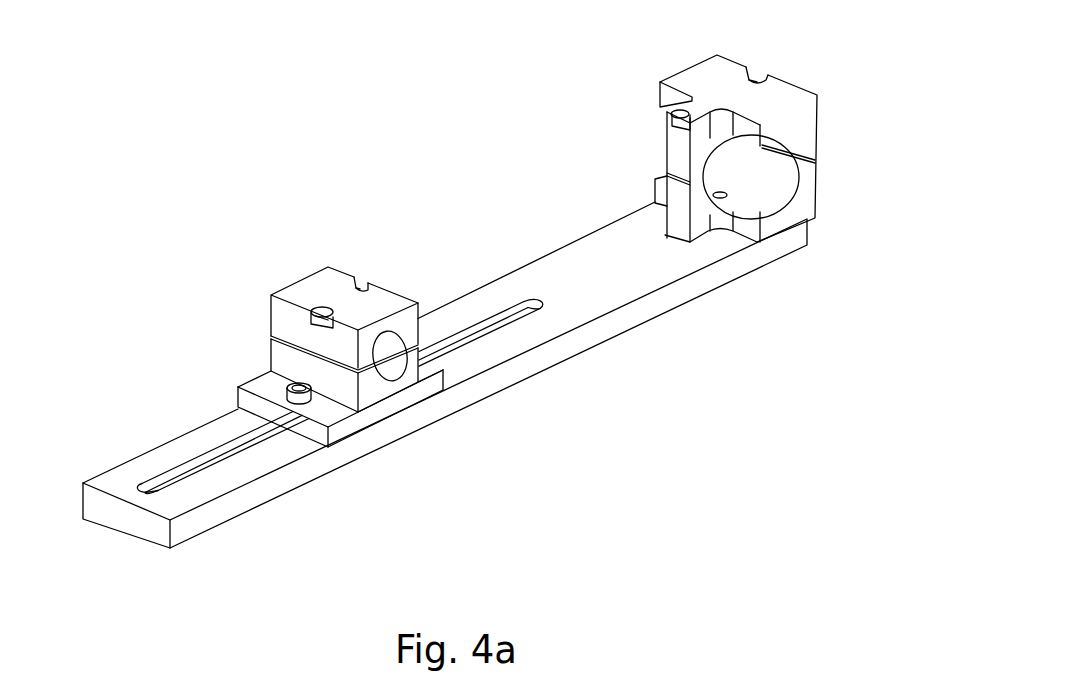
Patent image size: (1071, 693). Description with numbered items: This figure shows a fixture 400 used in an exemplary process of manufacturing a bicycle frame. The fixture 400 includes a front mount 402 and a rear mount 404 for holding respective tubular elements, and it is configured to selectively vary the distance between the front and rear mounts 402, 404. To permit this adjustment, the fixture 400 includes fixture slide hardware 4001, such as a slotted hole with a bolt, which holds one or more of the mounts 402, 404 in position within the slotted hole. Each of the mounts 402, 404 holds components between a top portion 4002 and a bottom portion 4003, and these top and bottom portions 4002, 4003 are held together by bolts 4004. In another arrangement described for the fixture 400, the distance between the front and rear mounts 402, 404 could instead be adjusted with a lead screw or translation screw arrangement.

The fixture 400 is at (487, 290).
The front mount 402 is at (810, 200).
The rear mount 404 is at (423, 392).
The fixture slide hardware 4001 is at (306, 400).
The top portion 4002 is at (391, 190).
The bottom portion 4003 is at (270, 362).
The bolts 4004 is at (367, 292).